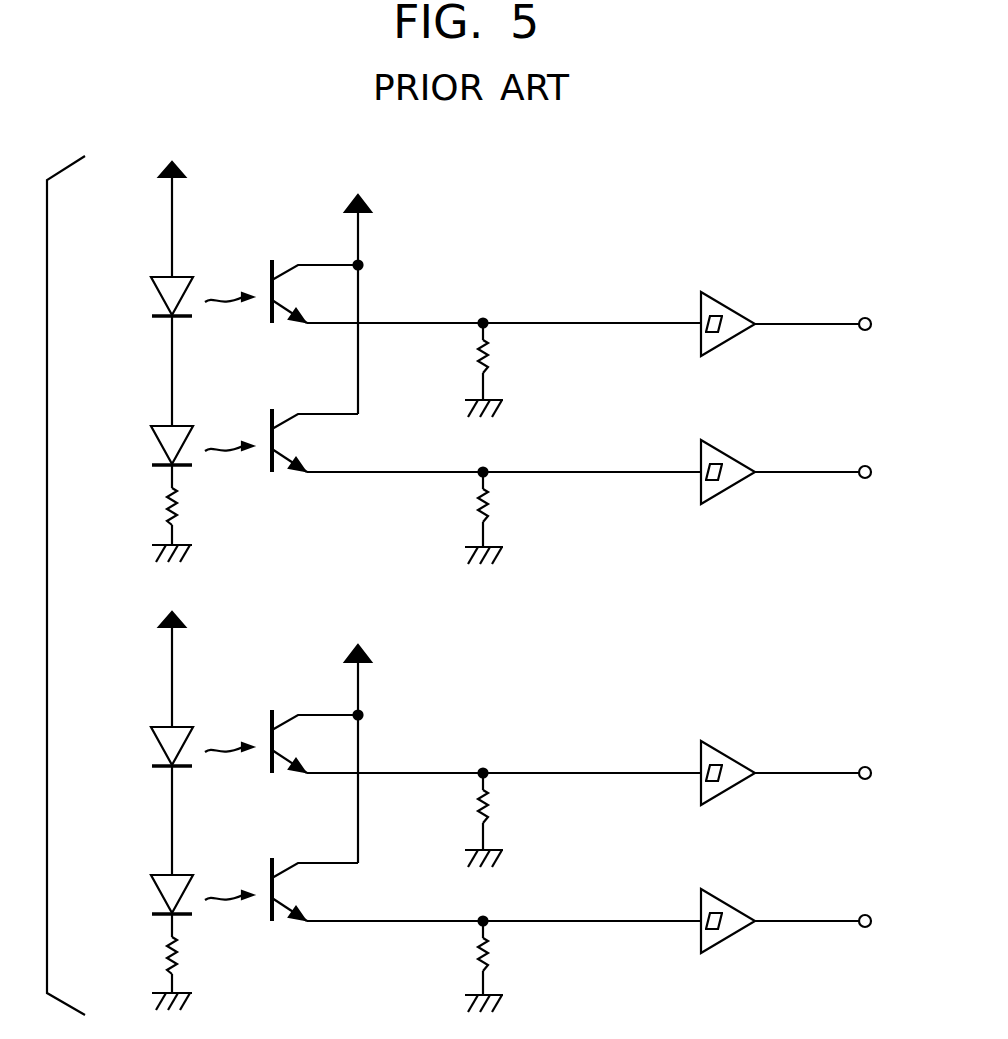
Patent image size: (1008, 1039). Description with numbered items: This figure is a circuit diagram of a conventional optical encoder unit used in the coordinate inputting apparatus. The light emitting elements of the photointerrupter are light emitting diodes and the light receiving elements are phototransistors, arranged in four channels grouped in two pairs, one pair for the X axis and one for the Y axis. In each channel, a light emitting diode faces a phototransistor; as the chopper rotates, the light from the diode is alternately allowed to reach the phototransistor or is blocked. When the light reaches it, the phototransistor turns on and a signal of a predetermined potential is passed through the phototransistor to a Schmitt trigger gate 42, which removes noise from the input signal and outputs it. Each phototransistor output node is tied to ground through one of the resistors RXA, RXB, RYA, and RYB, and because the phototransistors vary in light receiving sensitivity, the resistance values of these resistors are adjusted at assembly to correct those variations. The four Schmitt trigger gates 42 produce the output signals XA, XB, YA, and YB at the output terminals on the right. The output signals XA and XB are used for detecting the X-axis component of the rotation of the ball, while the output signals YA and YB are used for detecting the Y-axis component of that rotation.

The Schmitt trigger gate 42 is at (731, 335).
The resistor RXA is at (500, 368).
The resistor RXB is at (500, 516).
The resistor RYA is at (499, 818).
The resistor RYB is at (499, 965).
The output signal XA is at (835, 324).
The output signal XB is at (835, 472).
The output signal YA is at (833, 773).
The output signal YB is at (832, 921).